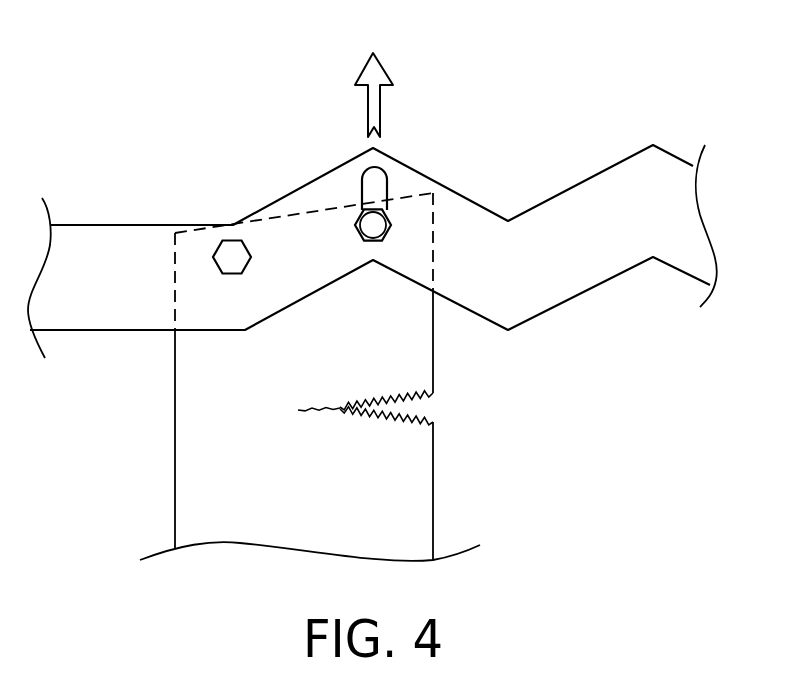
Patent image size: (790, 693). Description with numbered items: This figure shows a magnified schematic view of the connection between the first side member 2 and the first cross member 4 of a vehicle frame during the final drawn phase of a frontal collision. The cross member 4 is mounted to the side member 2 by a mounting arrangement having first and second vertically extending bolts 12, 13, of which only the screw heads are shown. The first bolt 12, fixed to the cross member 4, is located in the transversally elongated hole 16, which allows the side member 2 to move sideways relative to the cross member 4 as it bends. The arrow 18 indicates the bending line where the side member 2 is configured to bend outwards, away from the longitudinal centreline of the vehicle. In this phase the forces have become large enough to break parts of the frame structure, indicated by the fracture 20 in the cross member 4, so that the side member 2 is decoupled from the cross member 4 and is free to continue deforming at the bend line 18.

The first side member 2 is at (578, 243).
The first cross member 4 is at (372, 502).
The first bolt 12 is at (375, 222).
The second bolt 13 is at (232, 258).
The elongated second hole 16 is at (375, 177).
The bending line arrow 18 is at (365, 112).
The fracture 20 is at (437, 412).